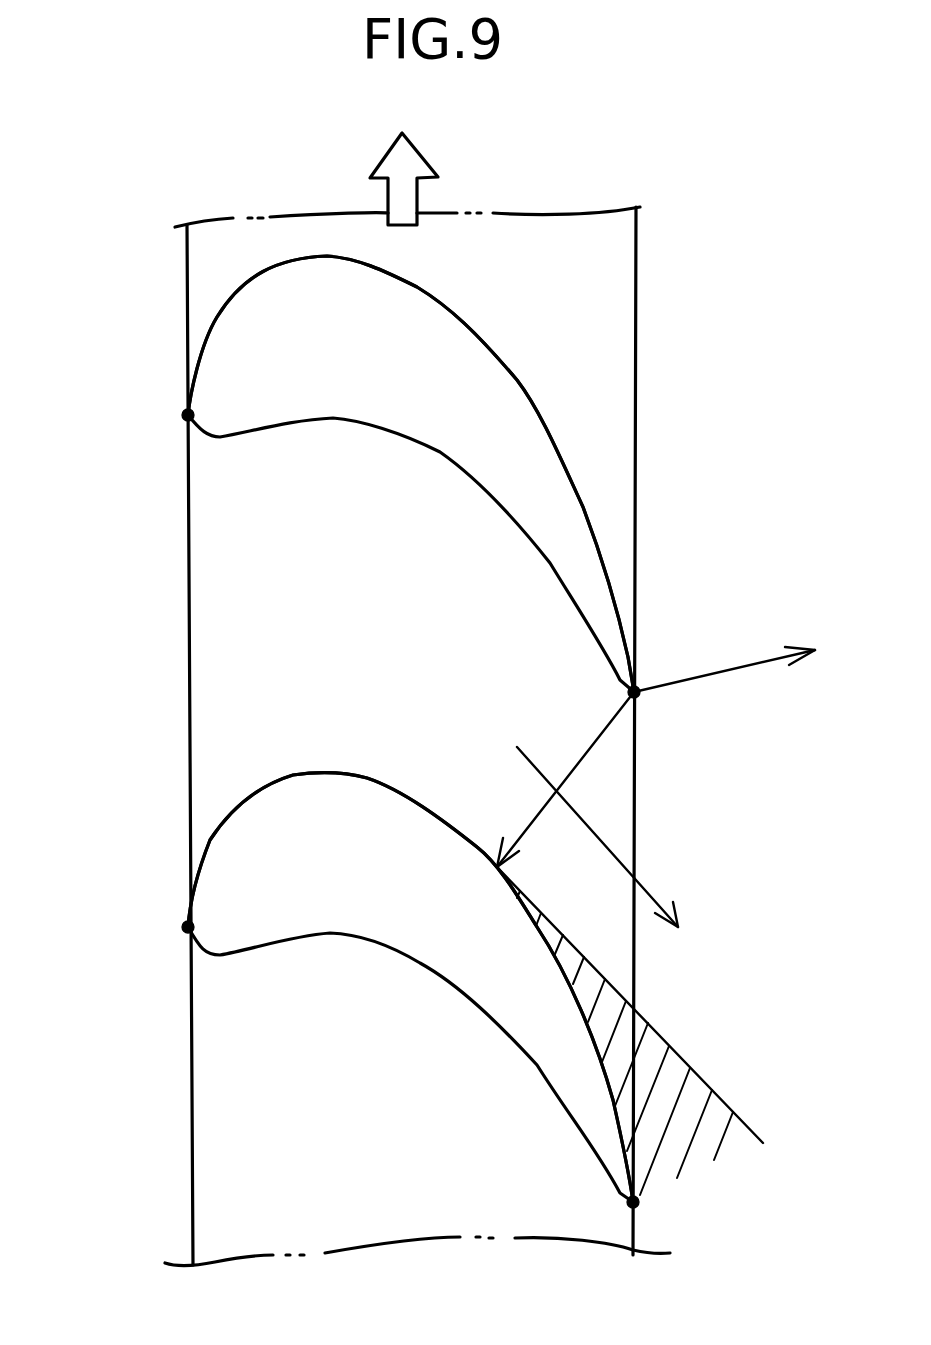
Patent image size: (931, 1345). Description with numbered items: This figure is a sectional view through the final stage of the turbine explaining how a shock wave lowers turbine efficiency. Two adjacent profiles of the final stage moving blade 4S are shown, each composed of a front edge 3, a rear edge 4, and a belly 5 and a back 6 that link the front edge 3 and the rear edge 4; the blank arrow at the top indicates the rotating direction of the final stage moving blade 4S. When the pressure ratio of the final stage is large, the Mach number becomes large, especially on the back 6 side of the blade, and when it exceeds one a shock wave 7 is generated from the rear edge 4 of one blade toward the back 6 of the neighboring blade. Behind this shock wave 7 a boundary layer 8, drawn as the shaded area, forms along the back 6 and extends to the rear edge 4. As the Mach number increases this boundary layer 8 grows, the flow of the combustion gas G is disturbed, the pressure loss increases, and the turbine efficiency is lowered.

The front edge 3 is at (188, 415).
The rear edge 4 is at (634, 692).
The final stage moving blade 4S is at (478, 333).
The belly 5 is at (373, 427).
The back 6 is at (515, 377).
The shock wave 7 is at (743, 668).
The boundary layer 8 is at (600, 1010).
The combustion gas G is at (650, 896).